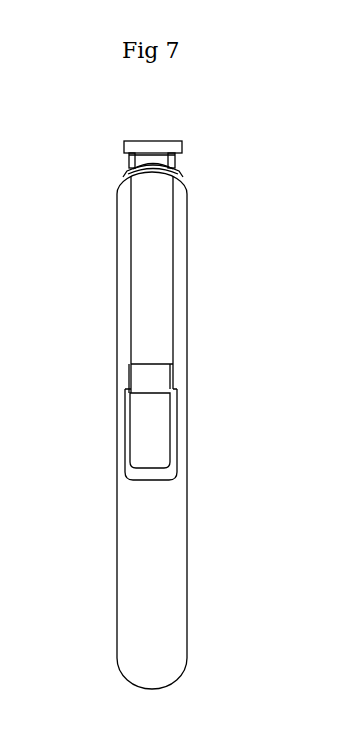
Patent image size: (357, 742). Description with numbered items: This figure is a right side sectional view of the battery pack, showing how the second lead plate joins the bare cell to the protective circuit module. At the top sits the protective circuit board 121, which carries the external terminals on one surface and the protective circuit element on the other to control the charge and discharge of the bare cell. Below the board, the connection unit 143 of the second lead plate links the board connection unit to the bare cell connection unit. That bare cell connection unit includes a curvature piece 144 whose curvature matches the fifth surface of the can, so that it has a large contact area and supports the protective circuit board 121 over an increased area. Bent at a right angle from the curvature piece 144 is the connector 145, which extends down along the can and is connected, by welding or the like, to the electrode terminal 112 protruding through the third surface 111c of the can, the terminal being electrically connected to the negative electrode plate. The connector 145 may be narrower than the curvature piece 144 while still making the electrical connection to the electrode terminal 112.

The protective circuit board 121 is at (131, 144).
The connection unit 143 is at (179, 161).
The curvature piece 144 is at (184, 173).
The connector 145 is at (165, 285).
The electrode terminal 112 is at (177, 419).
The third surface 111c is at (124, 403).